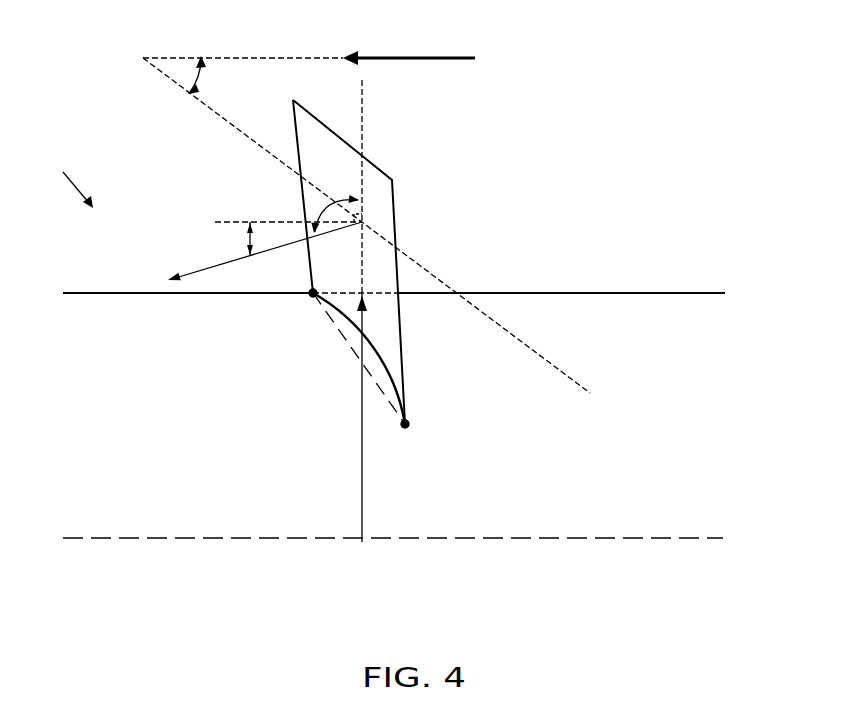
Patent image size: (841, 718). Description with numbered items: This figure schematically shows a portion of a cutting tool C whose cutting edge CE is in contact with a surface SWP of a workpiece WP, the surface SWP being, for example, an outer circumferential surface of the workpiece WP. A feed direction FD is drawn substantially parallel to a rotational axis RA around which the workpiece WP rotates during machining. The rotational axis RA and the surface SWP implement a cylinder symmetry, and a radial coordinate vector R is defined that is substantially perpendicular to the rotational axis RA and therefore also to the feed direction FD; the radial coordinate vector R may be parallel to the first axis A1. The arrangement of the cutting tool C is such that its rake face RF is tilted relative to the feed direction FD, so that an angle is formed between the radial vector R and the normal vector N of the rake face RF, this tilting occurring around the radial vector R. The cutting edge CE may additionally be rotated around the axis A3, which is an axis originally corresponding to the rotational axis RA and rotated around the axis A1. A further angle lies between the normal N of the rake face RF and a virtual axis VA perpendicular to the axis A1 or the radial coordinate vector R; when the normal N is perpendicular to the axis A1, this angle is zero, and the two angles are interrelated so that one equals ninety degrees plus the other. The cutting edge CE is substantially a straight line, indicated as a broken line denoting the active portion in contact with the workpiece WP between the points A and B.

The feed direction FD is at (411, 56).
The axis A3 is at (236, 128).
The first axis A1 is at (366, 90).
The radial coordinate vector R is at (362, 440).
The rake face RF is at (298, 135).
The cutting tool C is at (418, 172).
The workpiece WP is at (69, 175).
The virtual axis VA is at (234, 220).
The normal vector N is at (205, 265).
The surface of the workpiece SWP is at (688, 292).
The point A is at (309, 290).
The cutting edge CE is at (304, 318).
The point B is at (405, 429).
The rotational axis RA is at (690, 537).